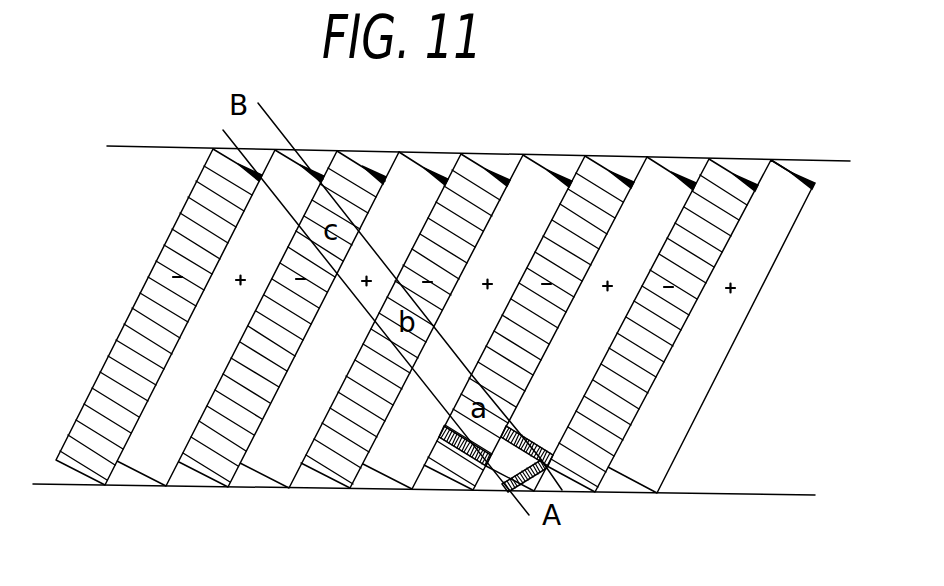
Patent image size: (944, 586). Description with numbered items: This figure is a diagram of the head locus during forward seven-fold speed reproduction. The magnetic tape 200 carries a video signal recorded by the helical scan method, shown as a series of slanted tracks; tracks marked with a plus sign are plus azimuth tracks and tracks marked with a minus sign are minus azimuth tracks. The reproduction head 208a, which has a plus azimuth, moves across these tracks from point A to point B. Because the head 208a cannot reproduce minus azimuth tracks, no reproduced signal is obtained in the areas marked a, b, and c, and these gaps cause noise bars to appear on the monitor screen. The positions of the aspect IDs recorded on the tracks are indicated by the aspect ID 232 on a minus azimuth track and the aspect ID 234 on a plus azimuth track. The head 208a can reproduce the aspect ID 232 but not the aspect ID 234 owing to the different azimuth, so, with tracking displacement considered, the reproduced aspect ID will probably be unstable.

The aspect ID position on minus azimuth track 232 is at (441, 427).
The aspect ID position on plus azimuth track 234 is at (539, 442).
The reproduction head 208a is at (498, 491).
The magnetic tape 200 is at (741, 478).